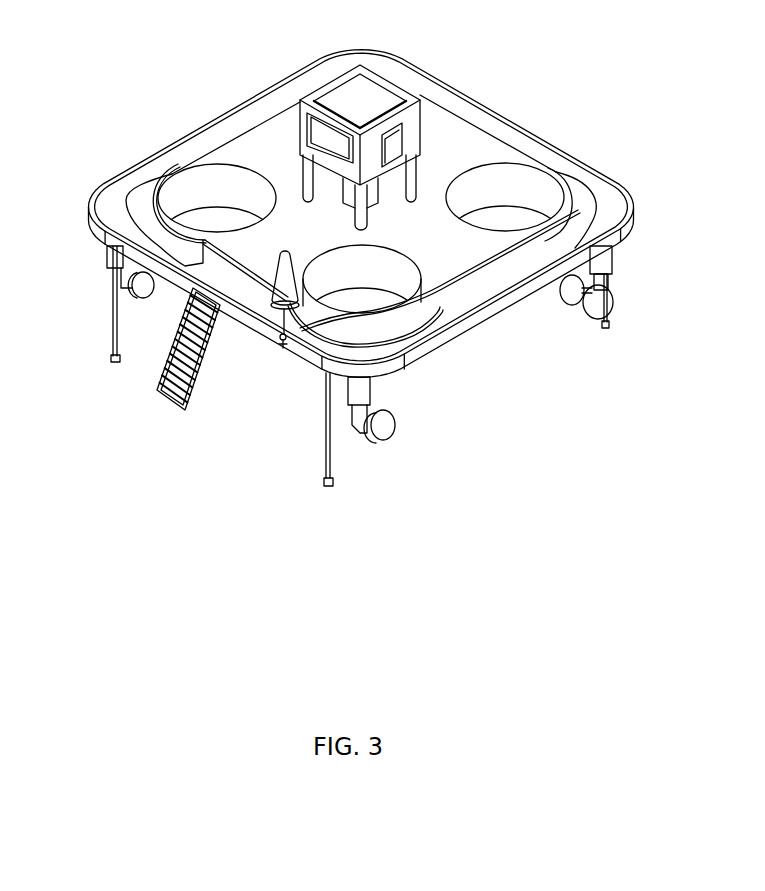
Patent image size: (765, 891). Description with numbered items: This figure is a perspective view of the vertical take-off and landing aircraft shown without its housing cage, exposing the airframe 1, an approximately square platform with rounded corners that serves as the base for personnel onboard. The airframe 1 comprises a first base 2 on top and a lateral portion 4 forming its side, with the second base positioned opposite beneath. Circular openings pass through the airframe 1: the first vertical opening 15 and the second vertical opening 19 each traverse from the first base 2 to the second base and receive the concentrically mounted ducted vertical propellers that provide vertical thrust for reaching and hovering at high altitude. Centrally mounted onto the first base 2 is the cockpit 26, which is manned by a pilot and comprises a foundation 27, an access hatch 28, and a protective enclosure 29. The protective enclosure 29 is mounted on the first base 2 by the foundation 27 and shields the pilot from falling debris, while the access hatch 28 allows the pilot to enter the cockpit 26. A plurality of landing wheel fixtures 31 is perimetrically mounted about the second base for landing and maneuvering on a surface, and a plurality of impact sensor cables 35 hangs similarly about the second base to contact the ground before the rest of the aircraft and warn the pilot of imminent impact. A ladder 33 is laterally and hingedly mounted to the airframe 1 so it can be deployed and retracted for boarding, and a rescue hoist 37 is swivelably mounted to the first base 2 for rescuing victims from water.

The airframe 1 is at (228, 90).
The first base 2 is at (105, 178).
The lateral portion 4 is at (86, 212).
The first vertical opening 15 is at (360, 262).
The second vertical opening 19 is at (500, 190).
The cockpit 26 is at (350, 129).
The foundation 27 is at (357, 220).
The access hatch 28 is at (403, 133).
The protective enclosure 29 is at (298, 148).
The landing wheel fixtures 31 is at (597, 313).
The ladder 33 is at (190, 397).
The impact sensor cables 35 is at (115, 362).
The rescue hoist 37 is at (276, 296).